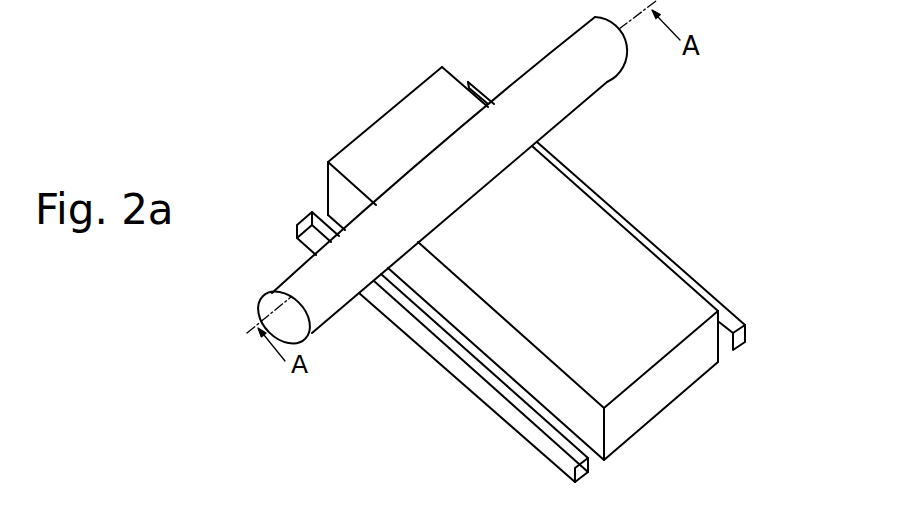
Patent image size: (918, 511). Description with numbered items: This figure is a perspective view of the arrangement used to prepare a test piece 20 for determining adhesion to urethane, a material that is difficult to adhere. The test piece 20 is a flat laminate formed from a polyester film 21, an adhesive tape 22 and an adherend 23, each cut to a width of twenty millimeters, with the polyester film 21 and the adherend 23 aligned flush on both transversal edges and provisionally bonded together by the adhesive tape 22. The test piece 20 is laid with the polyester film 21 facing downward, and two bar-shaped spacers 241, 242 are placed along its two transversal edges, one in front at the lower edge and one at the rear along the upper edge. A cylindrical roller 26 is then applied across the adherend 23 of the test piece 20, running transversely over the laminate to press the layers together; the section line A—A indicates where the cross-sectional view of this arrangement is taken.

The test piece 20 is at (581, 263).
The polyester film 21 is at (581, 263).
The adhesive tape 22 is at (581, 263).
The adherend 23 is at (677, 303).
The spacer 241 is at (518, 430).
The spacer 242 is at (735, 323).
The roller 26 is at (583, 65).